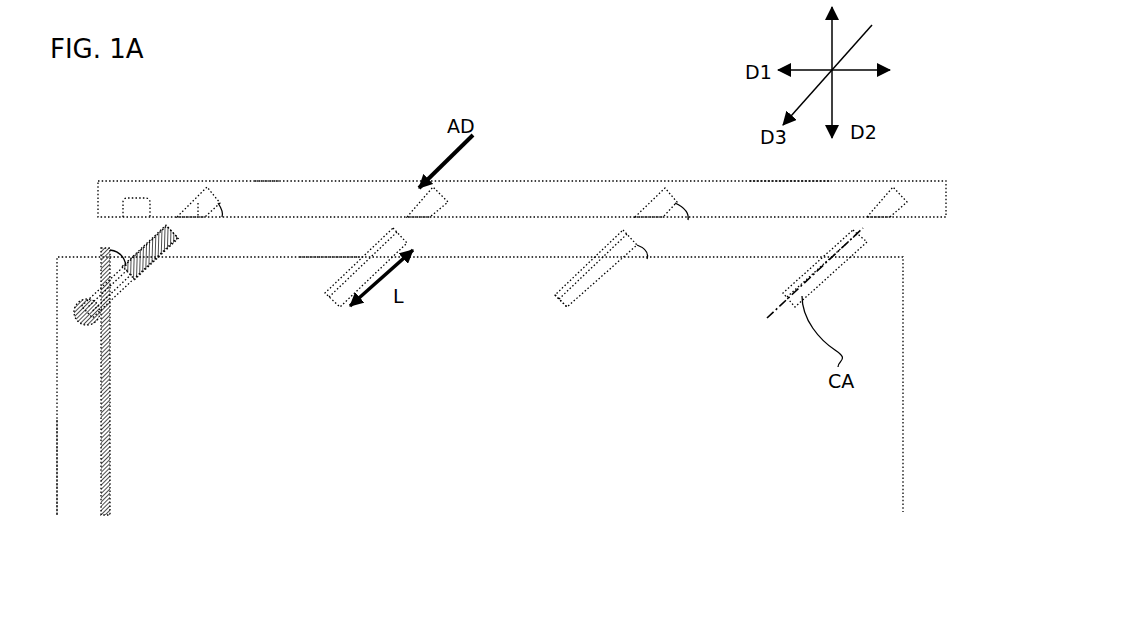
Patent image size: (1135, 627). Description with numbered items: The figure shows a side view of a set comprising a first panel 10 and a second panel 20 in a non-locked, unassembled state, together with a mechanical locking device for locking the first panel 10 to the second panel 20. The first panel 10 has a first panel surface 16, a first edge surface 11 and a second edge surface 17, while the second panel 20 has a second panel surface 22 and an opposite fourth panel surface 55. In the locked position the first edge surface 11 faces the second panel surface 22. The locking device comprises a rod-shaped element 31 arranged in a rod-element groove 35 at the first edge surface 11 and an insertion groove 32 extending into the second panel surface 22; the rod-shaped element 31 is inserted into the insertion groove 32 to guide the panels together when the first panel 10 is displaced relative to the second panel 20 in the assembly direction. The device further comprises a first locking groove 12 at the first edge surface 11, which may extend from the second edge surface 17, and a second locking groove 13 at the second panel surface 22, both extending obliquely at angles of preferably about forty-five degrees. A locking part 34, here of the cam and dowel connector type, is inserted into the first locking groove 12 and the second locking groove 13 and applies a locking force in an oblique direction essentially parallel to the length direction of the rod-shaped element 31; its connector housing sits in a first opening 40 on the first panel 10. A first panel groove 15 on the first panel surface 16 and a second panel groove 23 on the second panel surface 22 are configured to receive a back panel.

The first panel 10 is at (797, 447).
The first edge surface 11 is at (268, 258).
The first locking groove 12 is at (128, 283).
The second locking groove 13 is at (198, 204).
The first panel groove 15 is at (100, 483).
The first panel surface 16 is at (323, 437).
The second edge surface 17 is at (57, 460).
The second panel 20 is at (527, 196).
The second panel surface 22 is at (920, 218).
The second panel groove 23 is at (136, 216).
The rod-shaped element 31 is at (580, 273).
The insertion groove 32 is at (658, 215).
The locking part 34 is at (138, 288).
The rod-element groove 35 is at (557, 293).
The first opening 40 is at (86, 326).
The fourth panel surface 55 is at (775, 182).